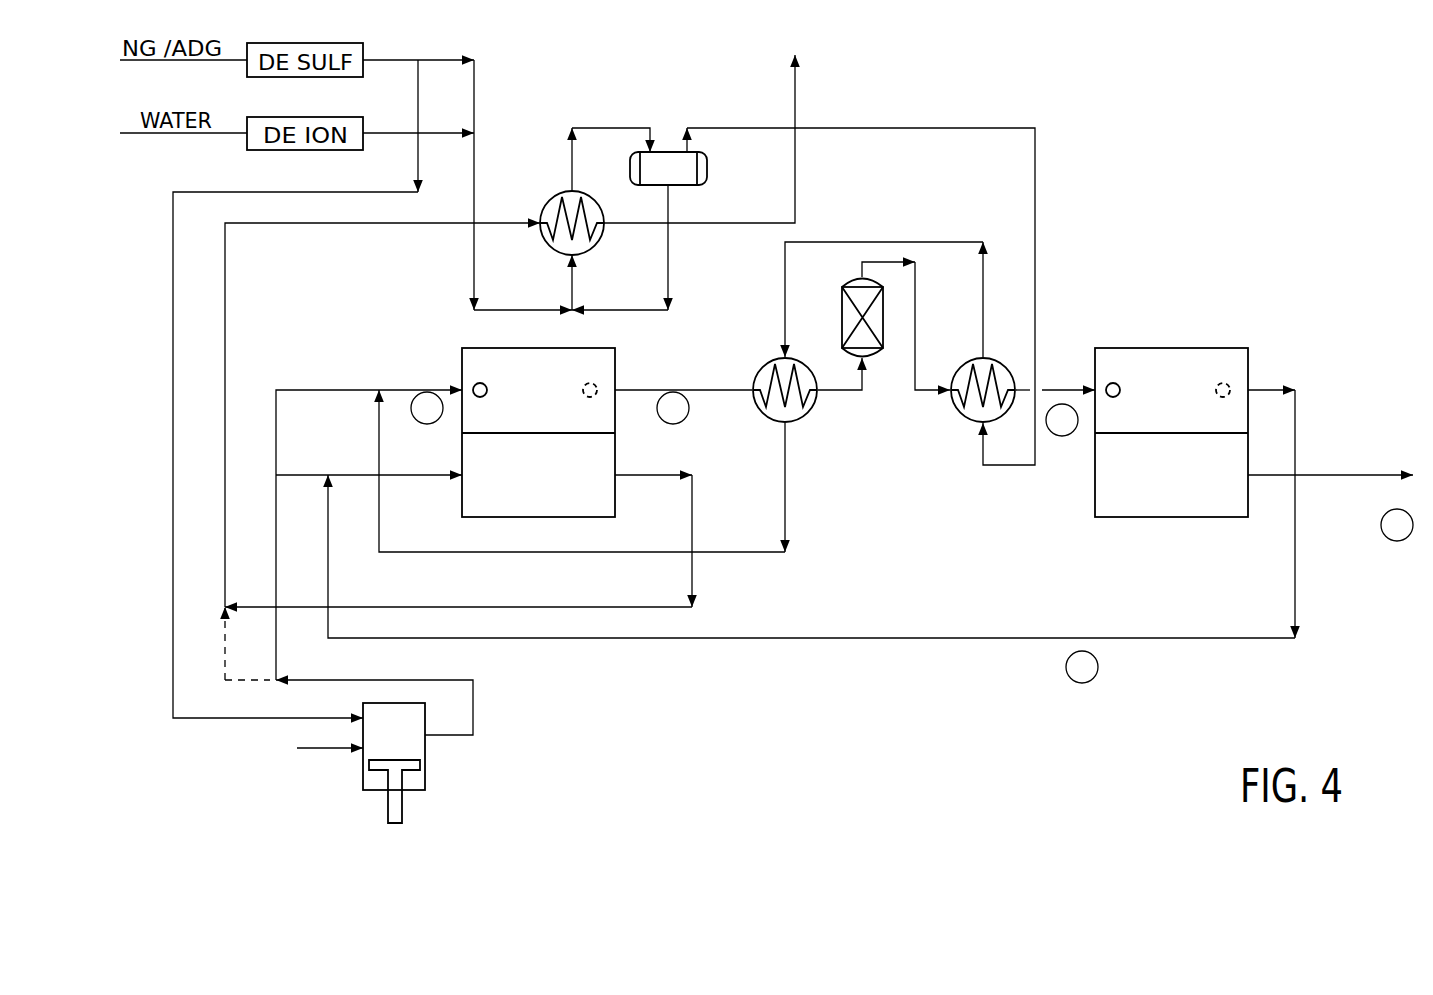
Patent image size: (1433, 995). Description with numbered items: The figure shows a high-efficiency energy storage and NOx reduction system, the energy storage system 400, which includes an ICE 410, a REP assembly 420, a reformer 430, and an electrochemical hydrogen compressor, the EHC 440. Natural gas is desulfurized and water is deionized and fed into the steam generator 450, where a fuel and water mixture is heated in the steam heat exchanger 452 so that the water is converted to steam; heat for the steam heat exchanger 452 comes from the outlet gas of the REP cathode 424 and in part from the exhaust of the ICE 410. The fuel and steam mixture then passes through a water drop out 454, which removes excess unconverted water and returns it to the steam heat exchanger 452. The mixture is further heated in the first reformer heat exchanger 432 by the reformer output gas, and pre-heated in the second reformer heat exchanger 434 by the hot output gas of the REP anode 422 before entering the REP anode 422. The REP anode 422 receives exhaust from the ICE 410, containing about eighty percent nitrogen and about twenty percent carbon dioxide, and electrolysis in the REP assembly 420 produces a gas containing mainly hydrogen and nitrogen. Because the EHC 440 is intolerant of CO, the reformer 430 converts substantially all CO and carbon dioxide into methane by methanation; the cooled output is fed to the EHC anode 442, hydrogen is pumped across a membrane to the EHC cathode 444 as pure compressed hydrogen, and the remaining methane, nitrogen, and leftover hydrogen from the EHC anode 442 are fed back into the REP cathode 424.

The energy storage system 400 is at (1222, 207).
The ICE 410 is at (333, 800).
The REP assembly 420 is at (625, 525).
The REP anode 422 is at (470, 372).
The REP cathode 424 is at (462, 483).
The reformer 430 is at (883, 467).
The first reformer heat exchanger 432 is at (960, 366).
The second reformer heat exchanger 434 is at (760, 414).
The EHC 440 is at (1292, 356).
The EHC anode 442 is at (1190, 355).
The EHC cathode 444 is at (1207, 508).
The steam generator 450 is at (678, 96).
The steam heat exchanger 452 is at (551, 194).
The water drop out 454 is at (707, 168).